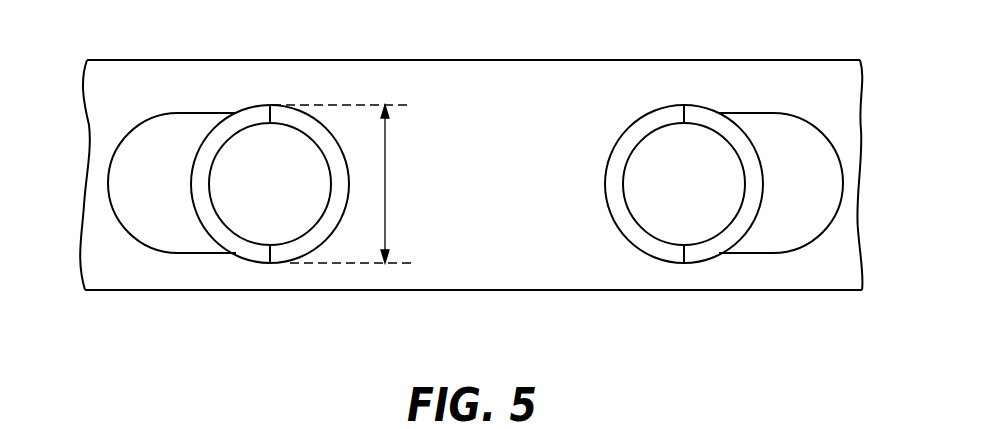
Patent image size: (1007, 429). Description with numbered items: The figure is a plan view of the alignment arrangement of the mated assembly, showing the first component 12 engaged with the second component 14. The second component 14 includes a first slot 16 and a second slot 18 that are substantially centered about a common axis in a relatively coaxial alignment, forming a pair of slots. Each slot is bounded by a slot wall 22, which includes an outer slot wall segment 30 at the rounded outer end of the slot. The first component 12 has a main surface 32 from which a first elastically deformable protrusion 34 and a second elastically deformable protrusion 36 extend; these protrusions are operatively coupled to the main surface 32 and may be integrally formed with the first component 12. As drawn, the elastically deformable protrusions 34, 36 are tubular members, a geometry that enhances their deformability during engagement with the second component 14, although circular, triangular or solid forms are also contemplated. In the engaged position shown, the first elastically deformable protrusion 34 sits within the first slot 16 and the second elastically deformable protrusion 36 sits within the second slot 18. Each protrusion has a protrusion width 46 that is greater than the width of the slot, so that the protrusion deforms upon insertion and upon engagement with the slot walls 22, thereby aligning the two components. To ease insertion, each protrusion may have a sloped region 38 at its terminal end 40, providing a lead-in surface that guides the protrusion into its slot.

The first component 12 is at (144, 247).
The second component 14 is at (428, 80).
The first slot 16 is at (105, 173).
The second slot 18 is at (789, 124).
The slot wall 22 is at (806, 231).
The outer slot wall segment 30 is at (836, 152).
The main surface 32 is at (164, 128).
The first elastically deformable protrusion 34 is at (291, 97).
The second elastically deformable protrusion 36 is at (648, 96).
The sloped region 38 is at (295, 248).
The terminal end 40 is at (235, 245).
The protrusion width 46 is at (401, 196).